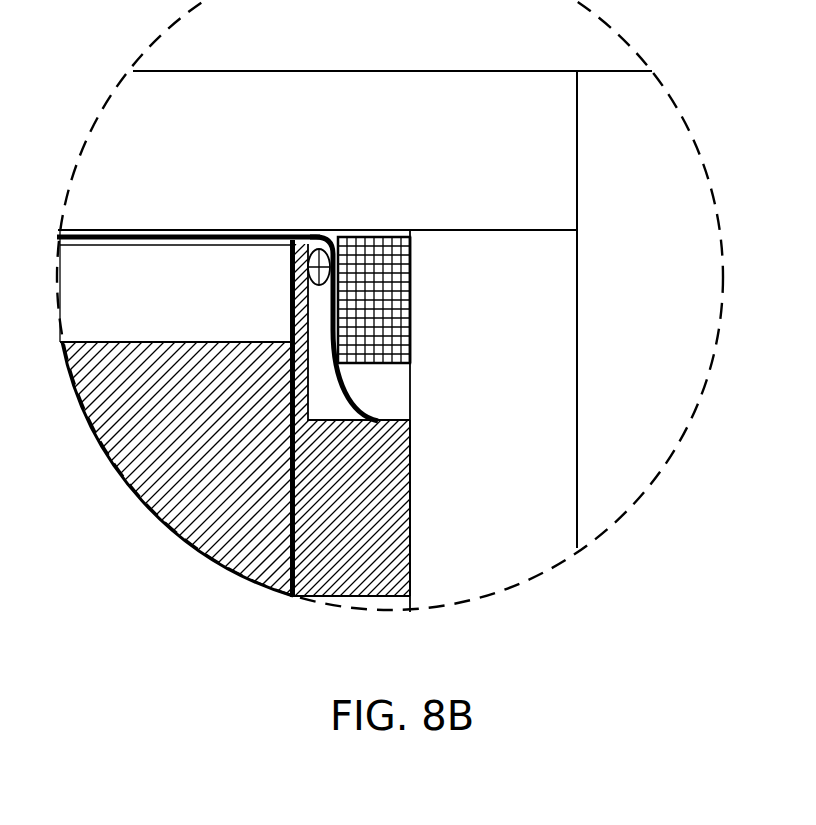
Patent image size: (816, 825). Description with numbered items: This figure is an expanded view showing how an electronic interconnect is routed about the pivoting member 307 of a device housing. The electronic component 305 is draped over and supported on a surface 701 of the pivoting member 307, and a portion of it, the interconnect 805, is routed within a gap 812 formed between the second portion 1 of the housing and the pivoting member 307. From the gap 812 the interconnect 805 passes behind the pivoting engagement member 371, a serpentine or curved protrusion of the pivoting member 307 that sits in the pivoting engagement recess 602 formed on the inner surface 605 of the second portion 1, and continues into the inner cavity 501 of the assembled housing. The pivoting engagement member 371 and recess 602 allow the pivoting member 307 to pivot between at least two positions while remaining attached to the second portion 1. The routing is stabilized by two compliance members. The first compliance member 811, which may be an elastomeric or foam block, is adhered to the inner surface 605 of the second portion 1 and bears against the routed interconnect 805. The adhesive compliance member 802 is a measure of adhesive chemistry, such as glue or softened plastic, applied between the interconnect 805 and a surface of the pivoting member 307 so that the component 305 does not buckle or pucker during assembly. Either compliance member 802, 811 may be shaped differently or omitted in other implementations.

The second portion 1 is at (500, 323).
The electronic component 305 is at (192, 235).
The pivoting member 307 is at (143, 390).
The pivoting engagement member 371 is at (376, 468).
The inner cavity 501 is at (390, 397).
The pivoting engagement recess 602 is at (393, 493).
The inner surface 605 is at (410, 272).
The surface 701 is at (137, 279).
The adhesive compliance member 802 is at (310, 266).
The interconnect 805 is at (316, 230).
The first compliance member 811 is at (392, 255).
The gap 812 is at (328, 210).